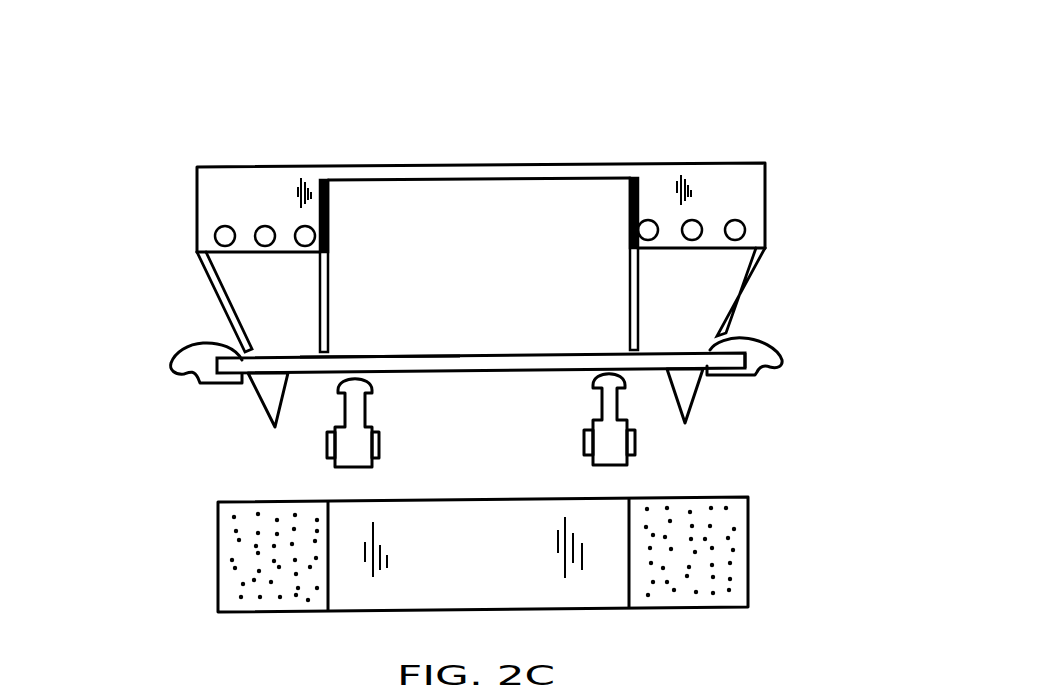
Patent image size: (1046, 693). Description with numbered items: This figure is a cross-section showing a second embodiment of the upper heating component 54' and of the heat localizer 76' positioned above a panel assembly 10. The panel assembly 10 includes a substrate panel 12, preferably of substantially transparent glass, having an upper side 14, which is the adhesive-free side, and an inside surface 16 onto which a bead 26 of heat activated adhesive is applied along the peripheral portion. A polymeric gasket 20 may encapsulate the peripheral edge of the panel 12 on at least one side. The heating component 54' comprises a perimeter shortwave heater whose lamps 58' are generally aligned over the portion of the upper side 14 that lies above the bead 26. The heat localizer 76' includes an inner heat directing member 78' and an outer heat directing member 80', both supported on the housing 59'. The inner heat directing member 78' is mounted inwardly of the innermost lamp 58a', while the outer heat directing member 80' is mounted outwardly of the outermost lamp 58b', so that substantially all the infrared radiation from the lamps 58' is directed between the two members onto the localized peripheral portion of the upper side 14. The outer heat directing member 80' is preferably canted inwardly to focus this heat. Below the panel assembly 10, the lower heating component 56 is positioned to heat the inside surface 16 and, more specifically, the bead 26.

The panel assembly 10 is at (783, 343).
The substrate panel 12 is at (538, 357).
The upper side 14 is at (368, 357).
The inside surface 16 is at (410, 375).
The polymeric gasket 20 is at (742, 377).
The bead 26 is at (698, 402).
The heating component 54' is at (509, 138).
The lower heating component 56 is at (756, 531).
The lamps 58' is at (522, 157).
The innermost lamp 58a' is at (631, 146).
The outermost lamp 58b' is at (816, 223).
The housing 59' is at (474, 119).
The heat localizer 76' is at (146, 316).
The inner heat directing member 78' is at (479, 207).
The outer heat directing member 80' is at (502, 296).